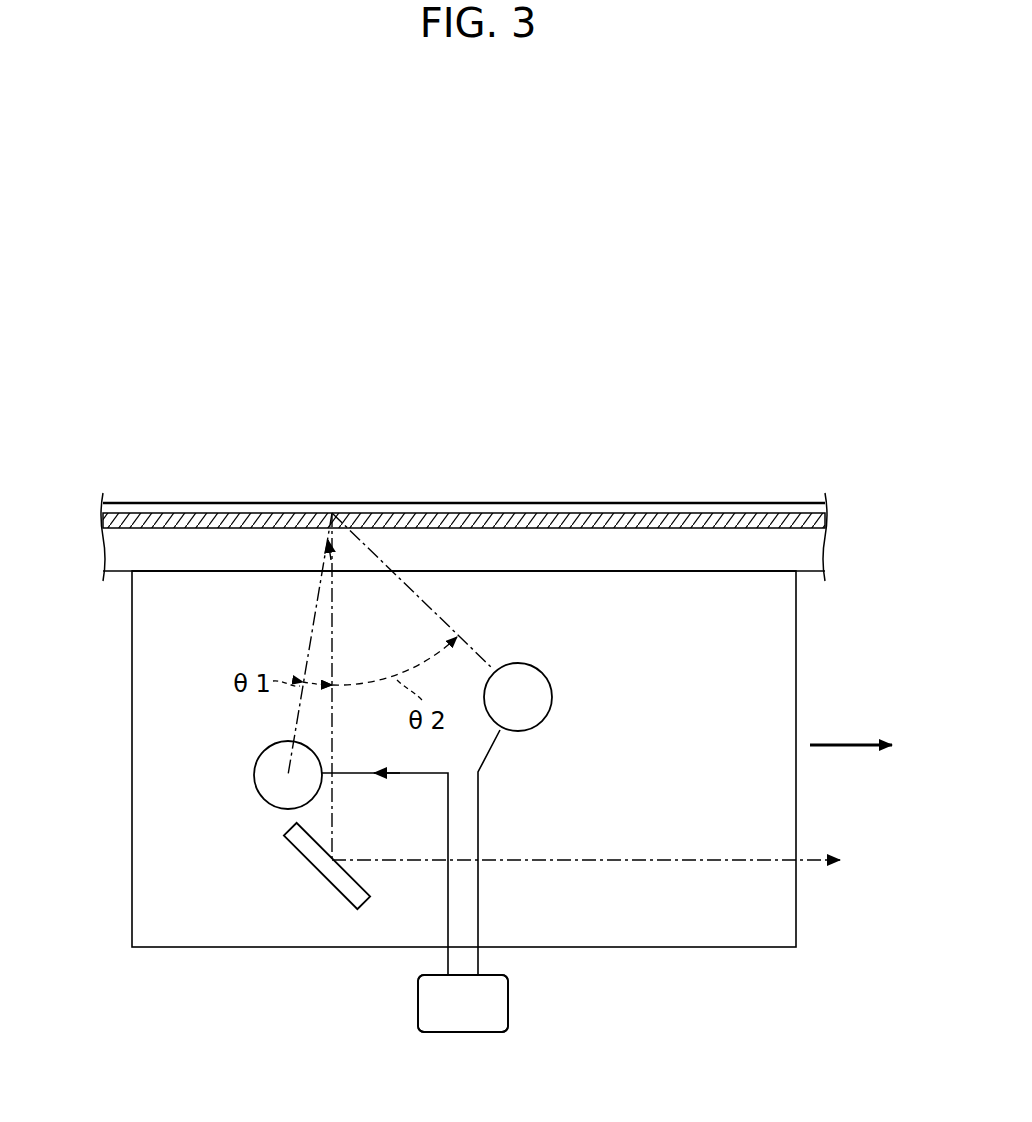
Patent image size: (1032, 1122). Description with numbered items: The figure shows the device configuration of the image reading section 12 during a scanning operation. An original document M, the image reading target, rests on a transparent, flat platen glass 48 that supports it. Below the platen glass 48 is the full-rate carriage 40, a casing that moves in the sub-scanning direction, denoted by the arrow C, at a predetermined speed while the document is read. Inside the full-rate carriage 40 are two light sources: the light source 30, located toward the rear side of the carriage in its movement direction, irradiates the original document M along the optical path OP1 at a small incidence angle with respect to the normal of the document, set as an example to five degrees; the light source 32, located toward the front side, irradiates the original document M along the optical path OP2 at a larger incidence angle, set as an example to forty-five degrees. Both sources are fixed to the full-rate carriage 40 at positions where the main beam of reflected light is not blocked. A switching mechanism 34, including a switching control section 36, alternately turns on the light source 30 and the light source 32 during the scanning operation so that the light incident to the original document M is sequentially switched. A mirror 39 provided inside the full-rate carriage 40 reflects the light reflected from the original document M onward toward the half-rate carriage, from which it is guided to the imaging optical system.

The image reading section 12 is at (186, 470).
The original document M is at (535, 503).
The platen glass 48 is at (728, 528).
The full-rate carriage 40 is at (131, 787).
The optical path OP1 is at (315, 603).
The optical path OP2 is at (433, 612).
The light source 30 is at (255, 780).
The light source 32 is at (548, 672).
The mirror 39 is at (305, 858).
The switching control section 36 is at (508, 1000).
The switching mechanism 34 is at (463, 1003).
The sub-scanning direction C is at (843, 745).